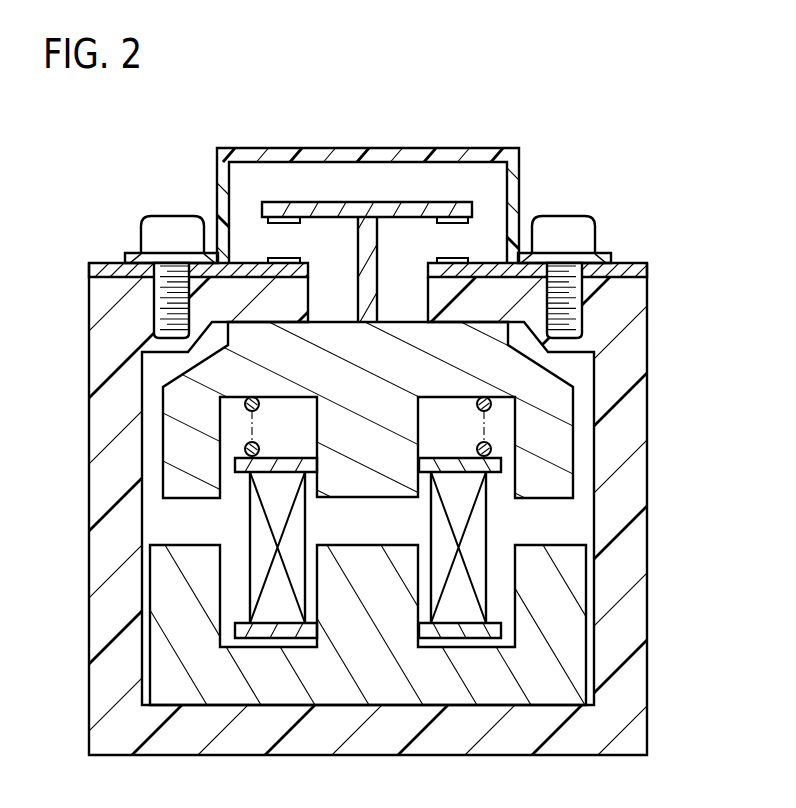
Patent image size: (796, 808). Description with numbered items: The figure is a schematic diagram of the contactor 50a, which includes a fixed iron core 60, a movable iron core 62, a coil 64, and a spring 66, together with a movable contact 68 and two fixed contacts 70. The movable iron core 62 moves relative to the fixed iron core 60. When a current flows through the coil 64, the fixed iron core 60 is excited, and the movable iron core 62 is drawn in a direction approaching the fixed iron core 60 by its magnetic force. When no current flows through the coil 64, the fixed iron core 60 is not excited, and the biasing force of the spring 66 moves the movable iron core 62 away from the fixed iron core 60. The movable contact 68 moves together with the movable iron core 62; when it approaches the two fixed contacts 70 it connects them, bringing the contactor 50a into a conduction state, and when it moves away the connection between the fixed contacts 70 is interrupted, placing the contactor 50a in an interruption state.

The contactor 50a is at (231, 106).
The fixed iron core 60 is at (550, 603).
The movable iron core 62 is at (550, 446).
The coil 64 is at (262, 532).
The spring 66 is at (258, 447).
The movable contact 68 is at (410, 210).
The fixed contacts 70 is at (289, 264).